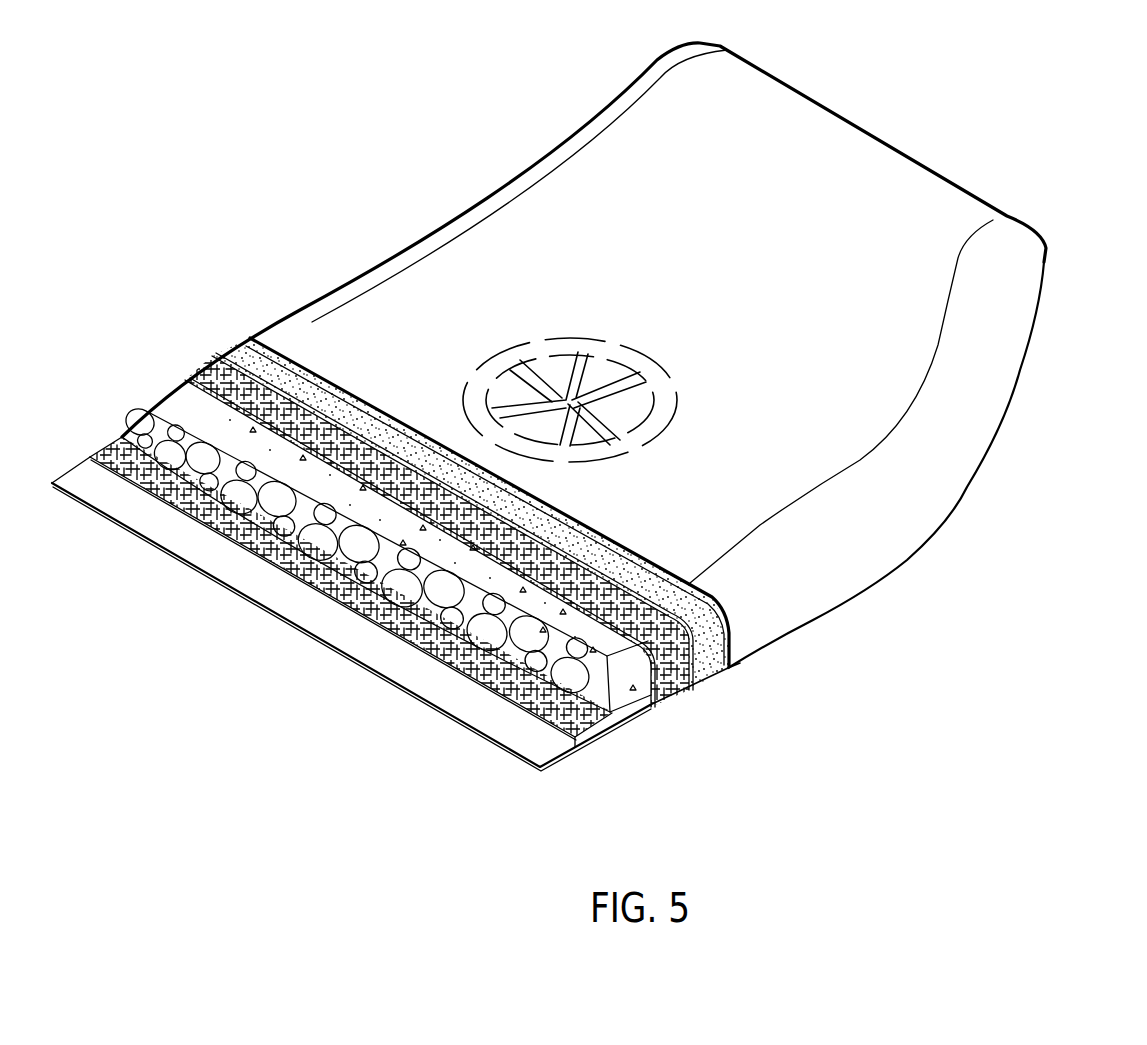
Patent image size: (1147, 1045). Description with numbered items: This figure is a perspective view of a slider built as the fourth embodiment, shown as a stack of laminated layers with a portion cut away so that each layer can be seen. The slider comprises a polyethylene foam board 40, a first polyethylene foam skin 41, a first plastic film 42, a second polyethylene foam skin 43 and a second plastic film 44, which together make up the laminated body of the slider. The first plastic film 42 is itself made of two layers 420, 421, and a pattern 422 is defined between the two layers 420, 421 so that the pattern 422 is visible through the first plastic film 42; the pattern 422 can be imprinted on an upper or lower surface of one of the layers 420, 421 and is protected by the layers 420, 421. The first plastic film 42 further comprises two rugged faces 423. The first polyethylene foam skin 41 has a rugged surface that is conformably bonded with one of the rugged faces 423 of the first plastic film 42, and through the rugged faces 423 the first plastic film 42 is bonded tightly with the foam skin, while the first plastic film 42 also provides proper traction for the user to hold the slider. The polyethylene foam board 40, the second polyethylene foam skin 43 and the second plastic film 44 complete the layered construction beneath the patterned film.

The polyethylene foam board 40 is at (627, 690).
The first polyethylene foam skin 41 is at (667, 677).
The first plastic film 42 is at (633, 414).
The layer 420 is at (703, 660).
The layer 421 is at (783, 640).
The pattern 422 is at (581, 338).
The rugged faces 423 is at (880, 343).
The second polyethylene foam skin 43 is at (573, 700).
The second plastic film 44 is at (442, 690).